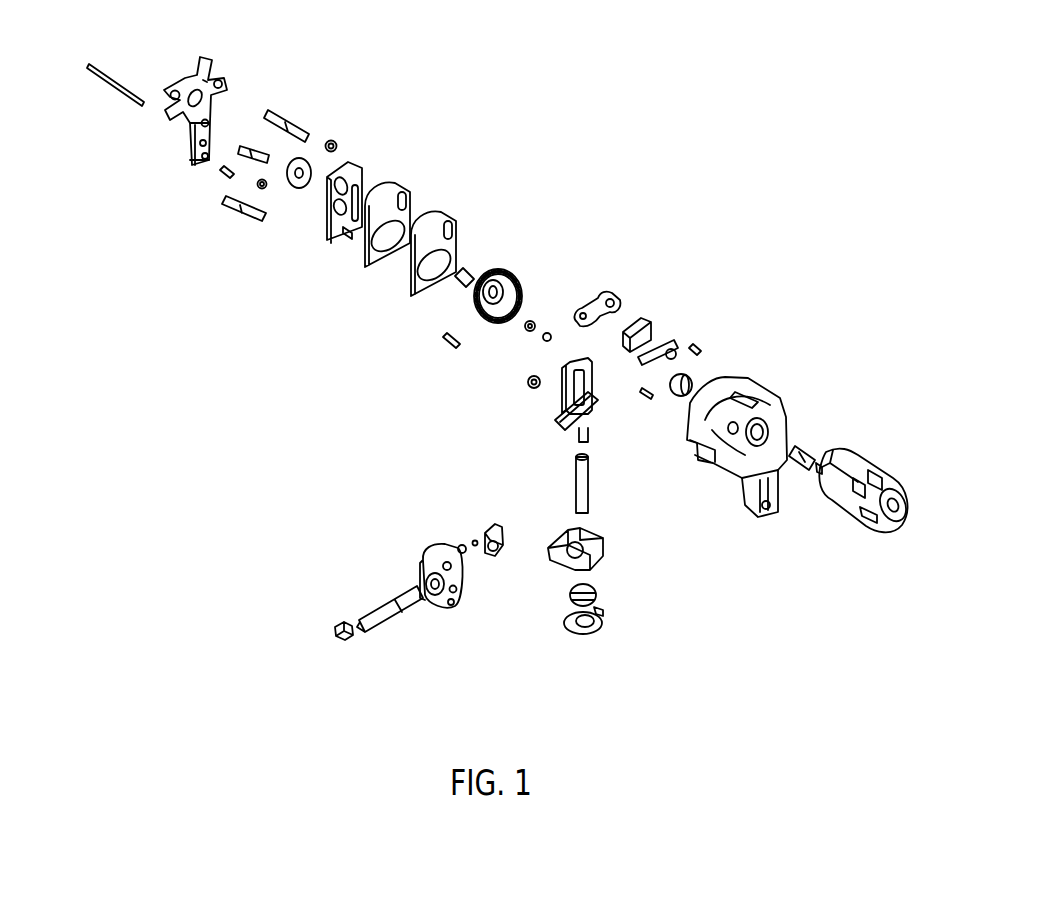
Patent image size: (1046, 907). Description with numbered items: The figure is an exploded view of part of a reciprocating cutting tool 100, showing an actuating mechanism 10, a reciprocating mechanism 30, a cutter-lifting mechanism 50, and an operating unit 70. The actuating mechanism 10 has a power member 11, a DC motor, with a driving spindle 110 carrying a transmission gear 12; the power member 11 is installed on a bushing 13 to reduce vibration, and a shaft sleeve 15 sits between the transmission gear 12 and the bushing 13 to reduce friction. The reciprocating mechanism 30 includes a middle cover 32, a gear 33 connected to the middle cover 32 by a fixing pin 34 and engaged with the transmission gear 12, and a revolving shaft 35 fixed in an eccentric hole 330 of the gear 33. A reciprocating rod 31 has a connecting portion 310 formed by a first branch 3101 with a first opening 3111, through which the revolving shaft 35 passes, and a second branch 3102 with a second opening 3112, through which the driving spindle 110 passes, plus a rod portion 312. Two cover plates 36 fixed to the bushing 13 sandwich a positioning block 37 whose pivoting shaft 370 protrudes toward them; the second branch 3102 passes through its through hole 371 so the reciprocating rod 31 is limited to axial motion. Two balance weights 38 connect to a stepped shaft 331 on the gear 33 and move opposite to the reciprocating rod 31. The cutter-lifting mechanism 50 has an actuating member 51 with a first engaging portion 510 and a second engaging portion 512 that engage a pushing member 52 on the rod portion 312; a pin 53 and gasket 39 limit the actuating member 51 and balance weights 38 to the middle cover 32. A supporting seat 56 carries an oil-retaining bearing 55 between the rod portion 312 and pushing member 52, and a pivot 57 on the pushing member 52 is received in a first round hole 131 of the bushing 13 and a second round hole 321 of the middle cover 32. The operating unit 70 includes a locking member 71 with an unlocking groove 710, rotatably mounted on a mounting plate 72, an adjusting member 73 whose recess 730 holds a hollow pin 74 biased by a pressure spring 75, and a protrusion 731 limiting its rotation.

The reciprocating cutting tool 100 is at (503, 40).
The actuating mechanism 10 is at (799, 453).
The power member 11 is at (852, 480).
The driving spindle 110 is at (820, 467).
The transmission gear 12 is at (800, 442).
The bushing 13 is at (737, 465).
The first round hole 131 is at (767, 517).
The shaft sleeve 15 is at (693, 380).
The reciprocating mechanism 30 is at (452, 317).
The reciprocating rod 31 is at (598, 437).
The connecting portion 310 is at (547, 405).
The first branch 3101 is at (558, 431).
The second branch 3102 is at (563, 392).
The first opening 3111 is at (594, 397).
The second opening 3112 is at (586, 364).
The rod portion 312 is at (579, 473).
The middle cover 32 is at (217, 78).
The second round hole 321 is at (199, 161).
The gear 33 is at (507, 298).
The eccentric hole 330 is at (494, 325).
The stepped shaft 331 is at (487, 287).
The fixing pin 34 is at (241, 147).
The revolving shaft 35 is at (445, 342).
The cover plates 36 is at (599, 292).
The positioning block 37 is at (658, 304).
The pivoting shaft 370 is at (650, 330).
The through hole 371 is at (637, 318).
The balance weights 38 is at (395, 192).
The gasket 39 is at (329, 142).
The cutter-lifting mechanism 50 is at (316, 203).
The actuating member 51 is at (348, 206).
The first engaging portion 510 is at (333, 238).
The second engaging portion 512 is at (347, 240).
The pushing member 52 is at (590, 534).
The pin 53 is at (292, 118).
The oil-retaining bearing 55 is at (590, 584).
The supporting seat 56 is at (602, 616).
The pivot 57 is at (607, 556).
The operating unit 70 is at (437, 566).
The locking member 71 is at (380, 617).
The unlocking groove 710 is at (392, 617).
The mounting plate 72 is at (424, 566).
The adjusting member 73 is at (510, 542).
The recess 730 is at (500, 538).
The protrusion 731 is at (488, 556).
The hollow pin 74 is at (457, 550).
The pressure spring 75 is at (476, 543).